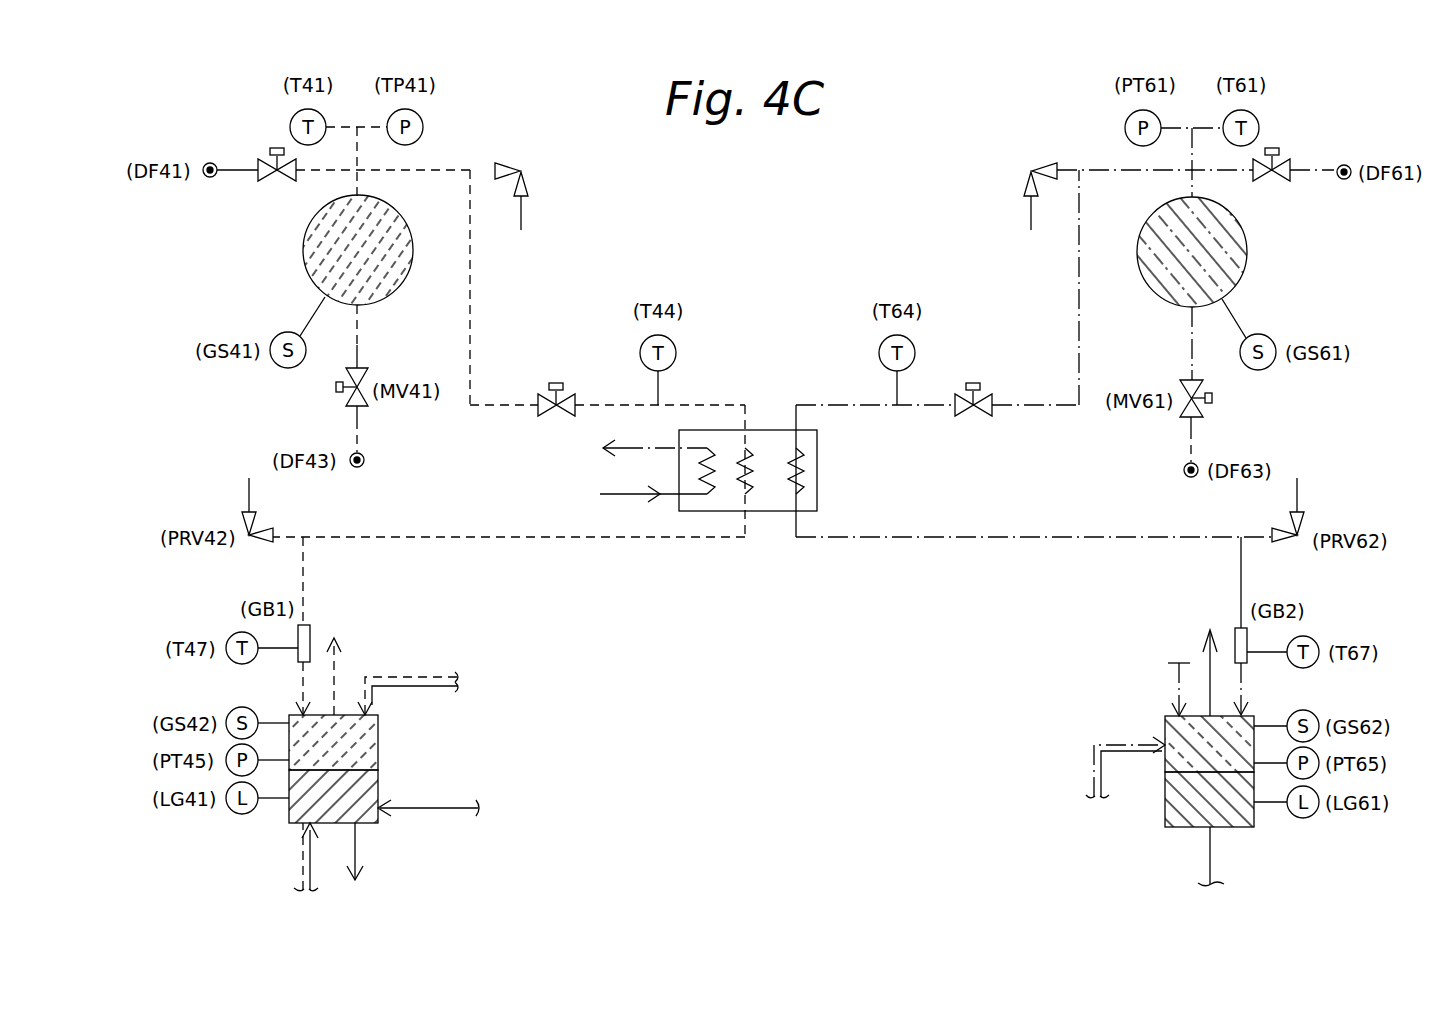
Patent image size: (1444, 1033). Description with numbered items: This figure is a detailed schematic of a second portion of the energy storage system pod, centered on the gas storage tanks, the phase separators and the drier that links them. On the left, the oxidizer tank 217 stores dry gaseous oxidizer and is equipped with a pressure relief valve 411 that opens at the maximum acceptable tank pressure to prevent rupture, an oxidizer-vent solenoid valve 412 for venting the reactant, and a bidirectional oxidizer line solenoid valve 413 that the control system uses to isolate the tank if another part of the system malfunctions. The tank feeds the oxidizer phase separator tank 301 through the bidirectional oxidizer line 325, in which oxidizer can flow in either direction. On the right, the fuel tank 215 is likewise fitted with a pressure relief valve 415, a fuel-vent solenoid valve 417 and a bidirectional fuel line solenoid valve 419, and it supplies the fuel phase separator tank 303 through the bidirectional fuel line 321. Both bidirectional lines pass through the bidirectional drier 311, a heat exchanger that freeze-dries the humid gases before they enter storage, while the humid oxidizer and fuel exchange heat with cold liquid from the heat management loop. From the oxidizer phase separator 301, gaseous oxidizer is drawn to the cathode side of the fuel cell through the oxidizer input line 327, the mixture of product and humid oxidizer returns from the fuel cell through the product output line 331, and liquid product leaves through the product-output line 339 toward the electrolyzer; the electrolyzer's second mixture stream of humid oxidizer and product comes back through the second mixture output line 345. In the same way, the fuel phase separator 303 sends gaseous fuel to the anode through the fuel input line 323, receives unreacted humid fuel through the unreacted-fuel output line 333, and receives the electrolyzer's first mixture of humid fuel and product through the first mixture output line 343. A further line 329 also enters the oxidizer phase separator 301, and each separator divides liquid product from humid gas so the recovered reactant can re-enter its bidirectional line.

The oxidizer-vent solenoid valve 412 is at (270, 149).
The pressure relief valve 411 is at (521, 170).
The oxidizer tank 217 is at (309, 278).
The bidirectional oxidizer line 325 is at (470, 290).
The bidirectional oxidizer line solenoid valve 413 is at (564, 383).
The bidirectional drier 311 is at (817, 472).
The pressure relief valve 415 is at (1031, 170).
The fuel-vent solenoid valve 417 is at (1283, 160).
The fuel tank 215 is at (1236, 282).
The bidirectional fuel line 321 is at (1079, 285).
The bidirectional fuel line solenoid valve 419 is at (985, 388).
The oxidizer phase separator tank 301 is at (378, 752).
The oxidizer input line 327 is at (334, 667).
The product output line 331 is at (428, 688).
The feed line 329 is at (440, 808).
The product-output line 339 is at (358, 856).
The second mixture output line 345 is at (302, 868).
The fuel phase separator tank 303 is at (1165, 800).
The fuel input line 323 is at (1207, 655).
The unreacted-fuel output line 333 is at (1178, 690).
The first mixture output line 343 is at (1092, 743).